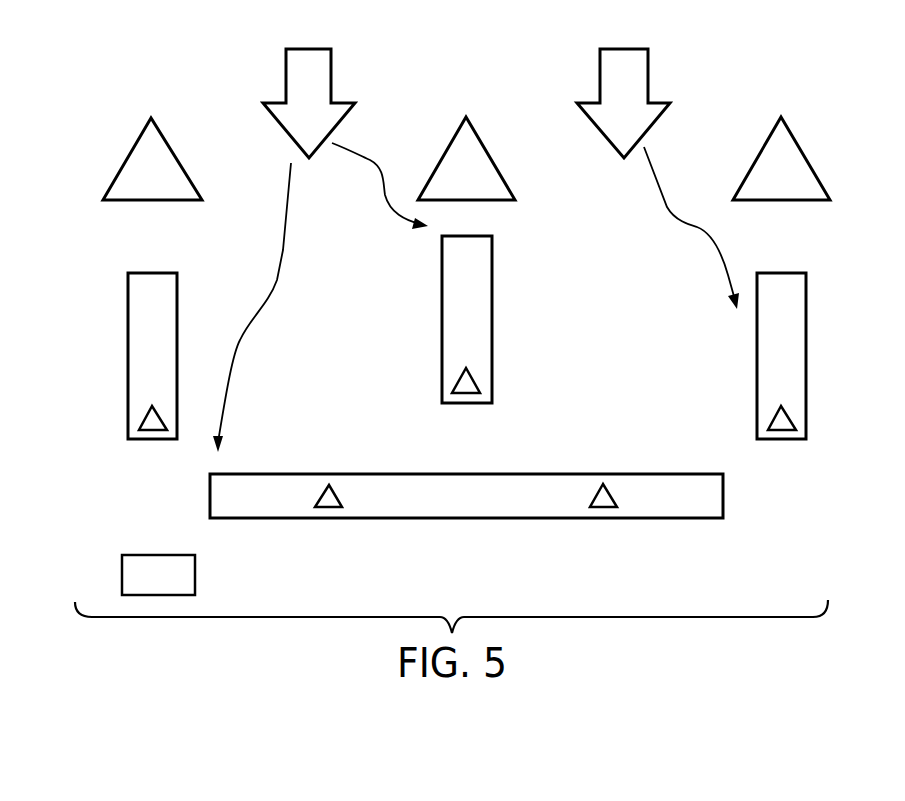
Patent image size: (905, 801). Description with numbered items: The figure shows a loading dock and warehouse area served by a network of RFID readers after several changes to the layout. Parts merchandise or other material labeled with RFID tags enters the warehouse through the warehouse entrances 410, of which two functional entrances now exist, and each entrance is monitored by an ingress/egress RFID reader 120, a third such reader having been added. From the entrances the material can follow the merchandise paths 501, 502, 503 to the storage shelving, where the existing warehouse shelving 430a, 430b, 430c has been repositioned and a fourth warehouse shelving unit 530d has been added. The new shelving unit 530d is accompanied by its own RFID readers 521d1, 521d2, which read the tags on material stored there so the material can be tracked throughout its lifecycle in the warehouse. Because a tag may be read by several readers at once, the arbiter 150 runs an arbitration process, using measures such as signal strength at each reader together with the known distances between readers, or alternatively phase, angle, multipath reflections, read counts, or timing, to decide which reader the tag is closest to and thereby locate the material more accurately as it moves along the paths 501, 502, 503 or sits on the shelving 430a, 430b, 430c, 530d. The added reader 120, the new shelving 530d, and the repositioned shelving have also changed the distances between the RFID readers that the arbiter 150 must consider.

The warehouse entrance 410 is at (286, 72).
The ingress/egress RFID reader 120 is at (172, 192).
The warehouse shelving 430a is at (128, 352).
The warehouse shelving 430b is at (442, 318).
The warehouse shelving 430c is at (757, 355).
The merchandise path 501 is at (283, 250).
The merchandise path 502 is at (720, 247).
The merchandise path 503 is at (368, 158).
The fourth warehouse shelving unit 530d is at (458, 518).
The RFID reader 521d1 is at (326, 510).
The RFID reader 521d2 is at (606, 510).
The arbiter 150 is at (180, 586).